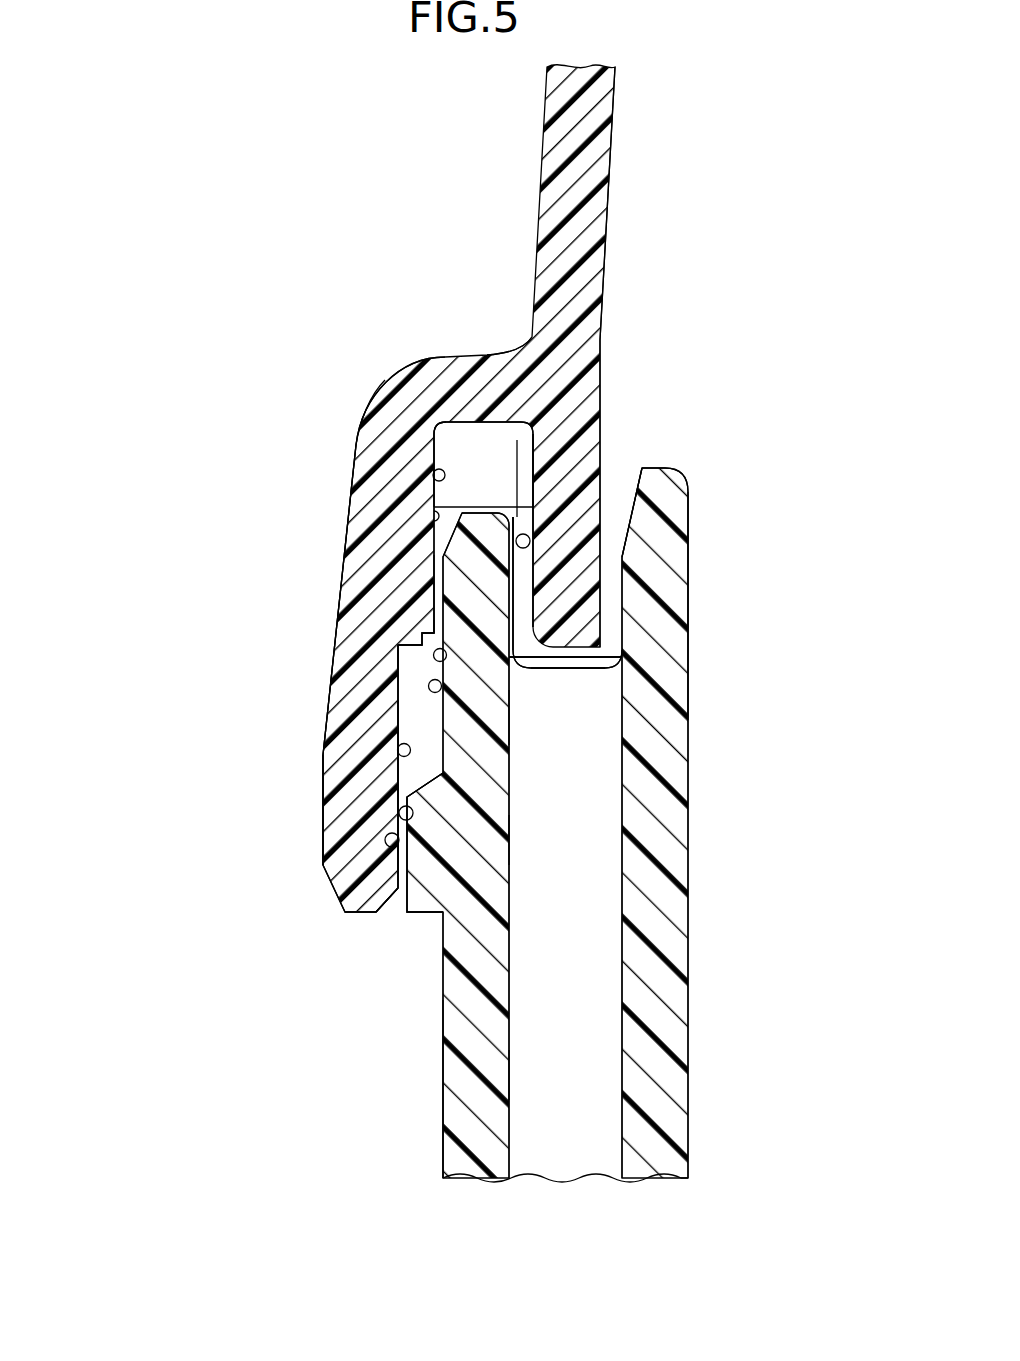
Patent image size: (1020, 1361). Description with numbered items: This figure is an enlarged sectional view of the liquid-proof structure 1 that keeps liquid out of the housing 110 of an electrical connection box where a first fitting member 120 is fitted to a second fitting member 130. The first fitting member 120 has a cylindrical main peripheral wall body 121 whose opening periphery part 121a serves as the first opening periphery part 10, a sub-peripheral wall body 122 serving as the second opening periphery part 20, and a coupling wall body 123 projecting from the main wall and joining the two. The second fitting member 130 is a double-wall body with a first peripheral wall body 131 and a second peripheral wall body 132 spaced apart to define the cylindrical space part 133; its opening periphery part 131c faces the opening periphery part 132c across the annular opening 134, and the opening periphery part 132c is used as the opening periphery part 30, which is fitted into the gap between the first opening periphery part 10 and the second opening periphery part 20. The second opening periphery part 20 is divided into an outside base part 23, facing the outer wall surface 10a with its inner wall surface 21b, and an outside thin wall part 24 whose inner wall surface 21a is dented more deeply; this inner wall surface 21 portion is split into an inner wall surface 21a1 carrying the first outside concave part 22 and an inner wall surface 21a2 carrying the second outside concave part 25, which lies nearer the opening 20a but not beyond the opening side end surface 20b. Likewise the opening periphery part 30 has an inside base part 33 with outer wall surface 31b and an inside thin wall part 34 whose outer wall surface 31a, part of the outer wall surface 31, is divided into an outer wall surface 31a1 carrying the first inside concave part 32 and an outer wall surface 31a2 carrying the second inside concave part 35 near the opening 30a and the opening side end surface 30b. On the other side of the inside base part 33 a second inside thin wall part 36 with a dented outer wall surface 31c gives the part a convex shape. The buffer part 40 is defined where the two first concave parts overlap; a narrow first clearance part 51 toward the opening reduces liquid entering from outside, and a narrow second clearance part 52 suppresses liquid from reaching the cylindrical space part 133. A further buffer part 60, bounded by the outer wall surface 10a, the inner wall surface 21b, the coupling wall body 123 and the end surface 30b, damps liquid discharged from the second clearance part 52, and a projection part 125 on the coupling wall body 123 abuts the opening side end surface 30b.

The liquid-proof structure 1 is at (150, 630).
The first opening periphery part 10 is at (517, 517).
The outer wall surface of the first opening periphery part 10a is at (530, 546).
The second opening periphery part 20 is at (323, 715).
The opening of the second opening periphery part 20a is at (395, 908).
The opening side end surface of the second opening periphery part 20b is at (360, 913).
The inner wall surface of the second opening periphery part 21 is at (287, 661).
The inner wall surface of the outside thin wall part 21a is at (213, 750).
The inner wall surface on which the first outside concave part is placed 21a1 is at (398, 751).
The inner wall surface on which the second outside concave part is placed 21a2 is at (399, 813).
The inner wall surface of the outside base part 21b is at (433, 475).
The first outside concave part 22 is at (407, 667).
The outside base part 23 is at (354, 460).
The outside thin wall part 24 is at (323, 745).
The second outside concave part 25 is at (392, 840).
The opening periphery part 30 is at (678, 592).
The opening of the opening periphery part 30a is at (515, 517).
The opening side end surface of the opening periphery part 30b is at (434, 432).
The outer wall surface of the opening periphery part 31 is at (592, 857).
The outer wall surface of the inside thin wall part 31a is at (778, 643).
The outer wall surface on which the first inside concave part is placed 31a1 is at (442, 688).
The outer wall surface on which the second inside concave part is placed 31a2 is at (618, 660).
The outer wall surface of the inside base part 31b is at (407, 859).
The outer wall surface of the second inside thin wall part 31c is at (443, 1067).
The first inside concave part 32 is at (438, 712).
The inside base part 33 is at (510, 840).
The inside thin wall part 34 is at (510, 712).
The second inside concave part 35 is at (433, 622).
The second inside thin wall part 36 is at (510, 1072).
The buffer part 40 is at (263, 610).
The first clearance part 51 is at (405, 880).
The second clearance part 52 is at (433, 593).
The buffer part 60 is at (517, 440).
The housing 110 is at (571, 622).
The first fitting member 120 is at (655, 152).
The main peripheral wall body 121 is at (547, 140).
The opening periphery part of the main peripheral wall body 121a is at (664, 494).
The sub-peripheral wall body 122 is at (253, 655).
The coupling wall body 123 is at (485, 353).
The projection part 125 is at (433, 514).
The second fitting member 130 is at (728, 958).
The first peripheral wall body 131 is at (690, 1107).
The opening periphery part of the first peripheral wall body 131c is at (689, 518).
The second peripheral wall body 132 is at (443, 1107).
The opening periphery part of the second peripheral wall body 132c is at (513, 593).
The cylindrical space part 133 is at (562, 1162).
The annular opening 134 is at (612, 510).